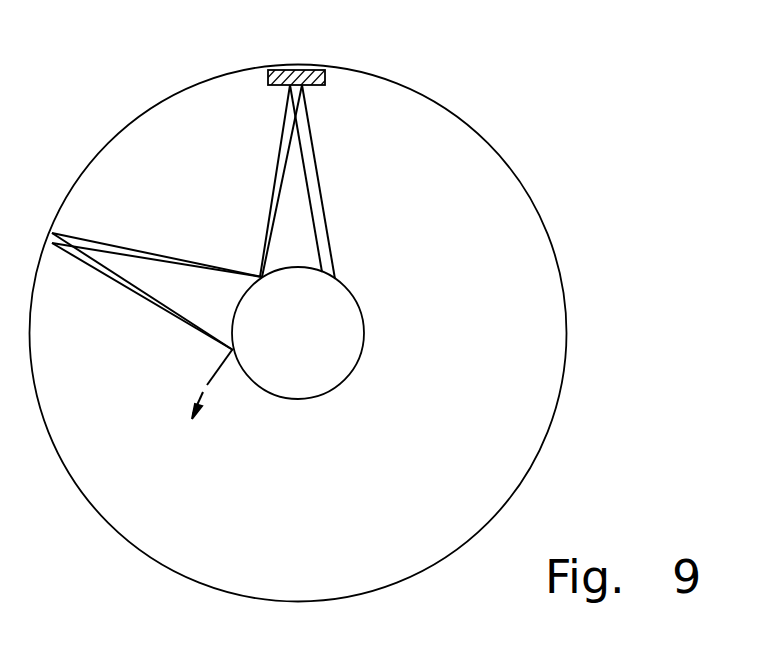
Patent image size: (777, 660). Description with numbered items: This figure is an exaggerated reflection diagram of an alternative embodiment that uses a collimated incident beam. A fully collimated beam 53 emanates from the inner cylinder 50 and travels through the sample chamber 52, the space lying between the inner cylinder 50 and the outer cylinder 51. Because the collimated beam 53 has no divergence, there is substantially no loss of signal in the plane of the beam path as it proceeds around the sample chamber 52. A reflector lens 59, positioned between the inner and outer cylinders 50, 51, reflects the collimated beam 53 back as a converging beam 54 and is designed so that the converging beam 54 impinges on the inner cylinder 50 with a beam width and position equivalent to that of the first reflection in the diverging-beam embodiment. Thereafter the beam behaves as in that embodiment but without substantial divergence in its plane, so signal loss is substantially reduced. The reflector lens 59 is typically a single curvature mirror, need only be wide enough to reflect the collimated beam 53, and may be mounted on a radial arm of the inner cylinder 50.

The inner cylinder 50 is at (364, 342).
The outer cylinder 51 is at (560, 263).
The sample chamber 52 is at (328, 484).
The collimated beam 53 is at (325, 208).
The converging beam 54 is at (277, 173).
The reflector lens 59 is at (268, 80).